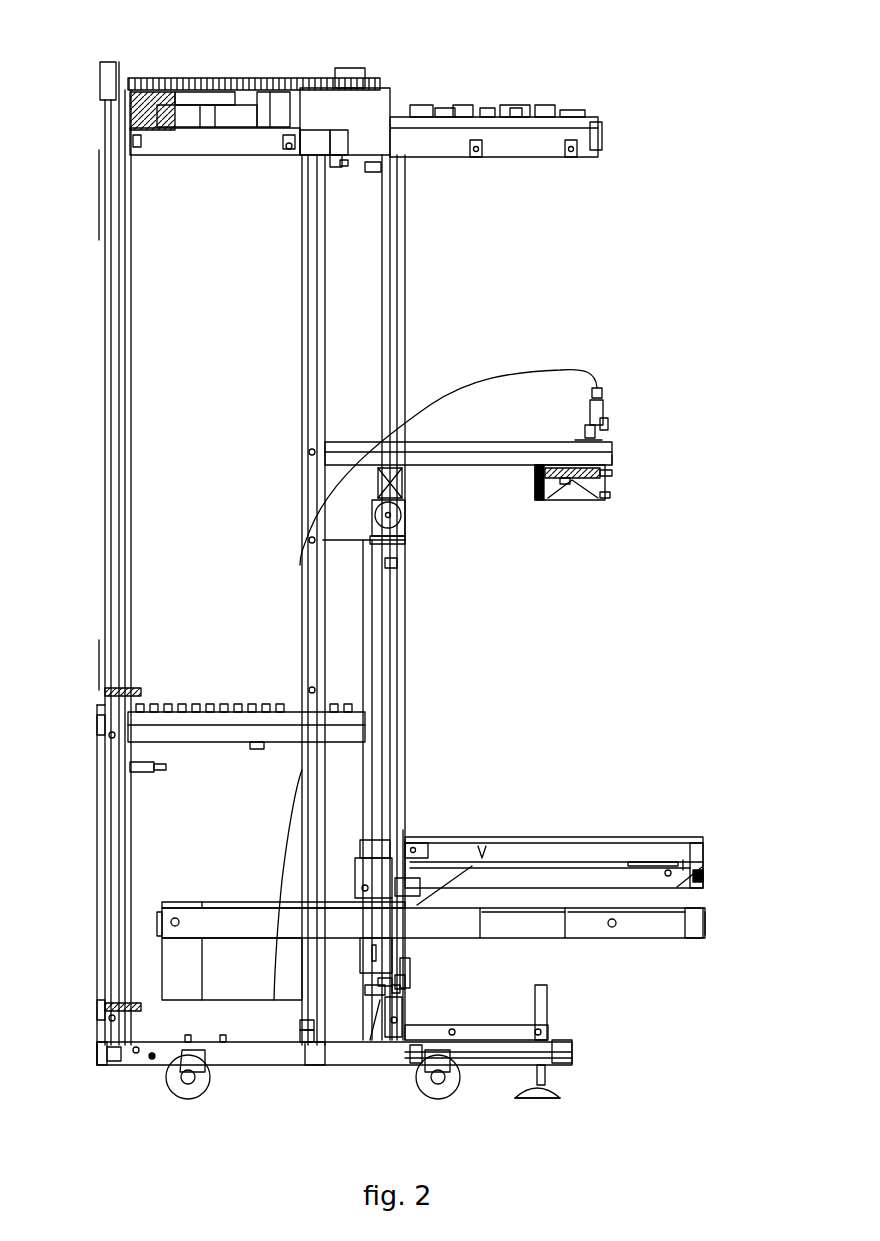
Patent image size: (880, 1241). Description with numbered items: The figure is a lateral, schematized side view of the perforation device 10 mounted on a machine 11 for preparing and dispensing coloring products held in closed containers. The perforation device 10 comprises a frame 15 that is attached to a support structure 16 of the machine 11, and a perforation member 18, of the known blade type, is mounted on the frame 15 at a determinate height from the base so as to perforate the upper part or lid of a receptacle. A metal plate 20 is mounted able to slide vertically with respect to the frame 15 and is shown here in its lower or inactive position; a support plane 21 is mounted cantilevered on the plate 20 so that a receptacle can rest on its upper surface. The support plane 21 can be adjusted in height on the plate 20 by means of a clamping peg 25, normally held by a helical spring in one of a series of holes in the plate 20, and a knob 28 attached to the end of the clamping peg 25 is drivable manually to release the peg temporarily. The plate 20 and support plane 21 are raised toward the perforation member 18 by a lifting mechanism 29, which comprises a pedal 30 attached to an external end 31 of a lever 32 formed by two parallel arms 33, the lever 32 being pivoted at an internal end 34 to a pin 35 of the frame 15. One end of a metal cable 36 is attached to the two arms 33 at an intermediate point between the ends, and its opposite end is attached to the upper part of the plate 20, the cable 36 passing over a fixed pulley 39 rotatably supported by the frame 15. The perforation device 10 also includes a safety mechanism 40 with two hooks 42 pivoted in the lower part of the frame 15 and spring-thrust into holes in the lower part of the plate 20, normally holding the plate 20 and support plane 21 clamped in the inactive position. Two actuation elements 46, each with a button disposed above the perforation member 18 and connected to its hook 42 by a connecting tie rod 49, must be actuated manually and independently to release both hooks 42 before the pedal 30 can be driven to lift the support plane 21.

The perforation device 10 is at (654, 374).
The machine 11 is at (513, 88).
The frame 15 is at (472, 450).
The support structure 16 is at (120, 272).
The perforation member 18 is at (600, 478).
The plate 20 is at (398, 795).
The support plane 21 is at (710, 847).
The clamping peg 25 is at (575, 860).
The knob 28 is at (682, 860).
The lifting mechanism 29 is at (752, 918).
The pedal 30 is at (695, 935).
The external end 31 is at (665, 935).
The lever 32 is at (615, 942).
The arms 33 is at (582, 935).
The internal end 34 is at (188, 915).
The pin 35 is at (178, 926).
The cable 36 is at (372, 612).
The fixed pulley 39 is at (398, 521).
The safety mechanism 40 is at (414, 985).
The hooks 42 is at (384, 995).
The actuation elements 46 is at (612, 413).
The connecting tie rod 49 is at (296, 805).